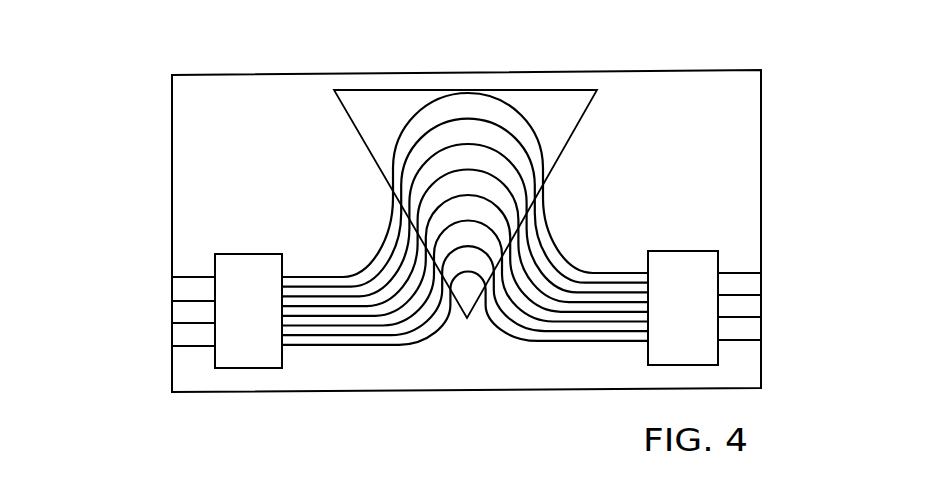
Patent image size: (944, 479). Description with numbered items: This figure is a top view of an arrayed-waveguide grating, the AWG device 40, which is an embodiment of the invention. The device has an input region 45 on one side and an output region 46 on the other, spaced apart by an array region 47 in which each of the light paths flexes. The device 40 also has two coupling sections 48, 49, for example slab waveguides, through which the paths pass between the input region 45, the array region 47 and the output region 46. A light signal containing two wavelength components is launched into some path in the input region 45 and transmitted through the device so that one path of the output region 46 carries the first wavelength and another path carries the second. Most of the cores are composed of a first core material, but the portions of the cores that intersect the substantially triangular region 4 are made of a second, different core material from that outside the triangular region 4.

The substantially triangular region 4 is at (545, 86).
The AWG device 40 is at (766, 66).
The input region 45 is at (164, 324).
The output region 46 is at (768, 320).
The array region 47 is at (612, 267).
The coupling section 48 is at (247, 252).
The coupling section 49 is at (717, 243).